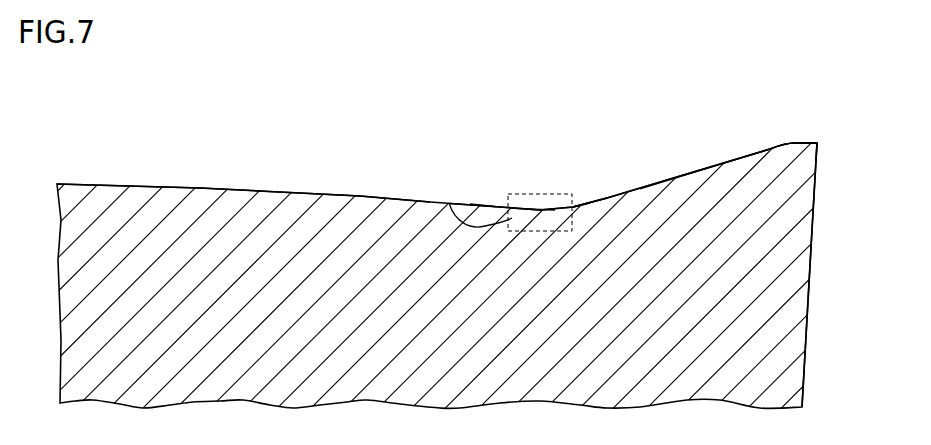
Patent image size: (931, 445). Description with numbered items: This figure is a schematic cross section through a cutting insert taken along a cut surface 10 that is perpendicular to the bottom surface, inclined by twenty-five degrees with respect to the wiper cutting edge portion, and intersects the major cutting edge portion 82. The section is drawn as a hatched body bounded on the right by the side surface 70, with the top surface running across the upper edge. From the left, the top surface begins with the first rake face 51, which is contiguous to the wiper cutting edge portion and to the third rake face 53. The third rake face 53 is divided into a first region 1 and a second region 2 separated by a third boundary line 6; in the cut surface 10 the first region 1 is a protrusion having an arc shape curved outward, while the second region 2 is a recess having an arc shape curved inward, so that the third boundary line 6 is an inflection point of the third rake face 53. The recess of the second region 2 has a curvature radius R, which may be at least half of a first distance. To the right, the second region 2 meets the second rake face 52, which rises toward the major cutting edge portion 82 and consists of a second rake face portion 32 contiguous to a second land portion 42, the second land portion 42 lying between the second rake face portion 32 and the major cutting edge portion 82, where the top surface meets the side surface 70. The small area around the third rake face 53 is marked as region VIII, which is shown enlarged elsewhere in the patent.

The cut surface 10 is at (103, 298).
The first rake face 51 is at (190, 187).
The third rake face 53 is at (562, 148).
The first region 1 is at (480, 205).
The third boundary line 6 is at (540, 211).
The second region 2 is at (603, 203).
The second rake face 52 is at (817, 93).
The second rake face portion 32 is at (747, 152).
The second land portion 42 is at (807, 143).
The major cutting edge portion 82 is at (820, 143).
The side surface 70 is at (808, 302).
The region VIII is at (449, 203).
The curvature radius R is at (583, 205).